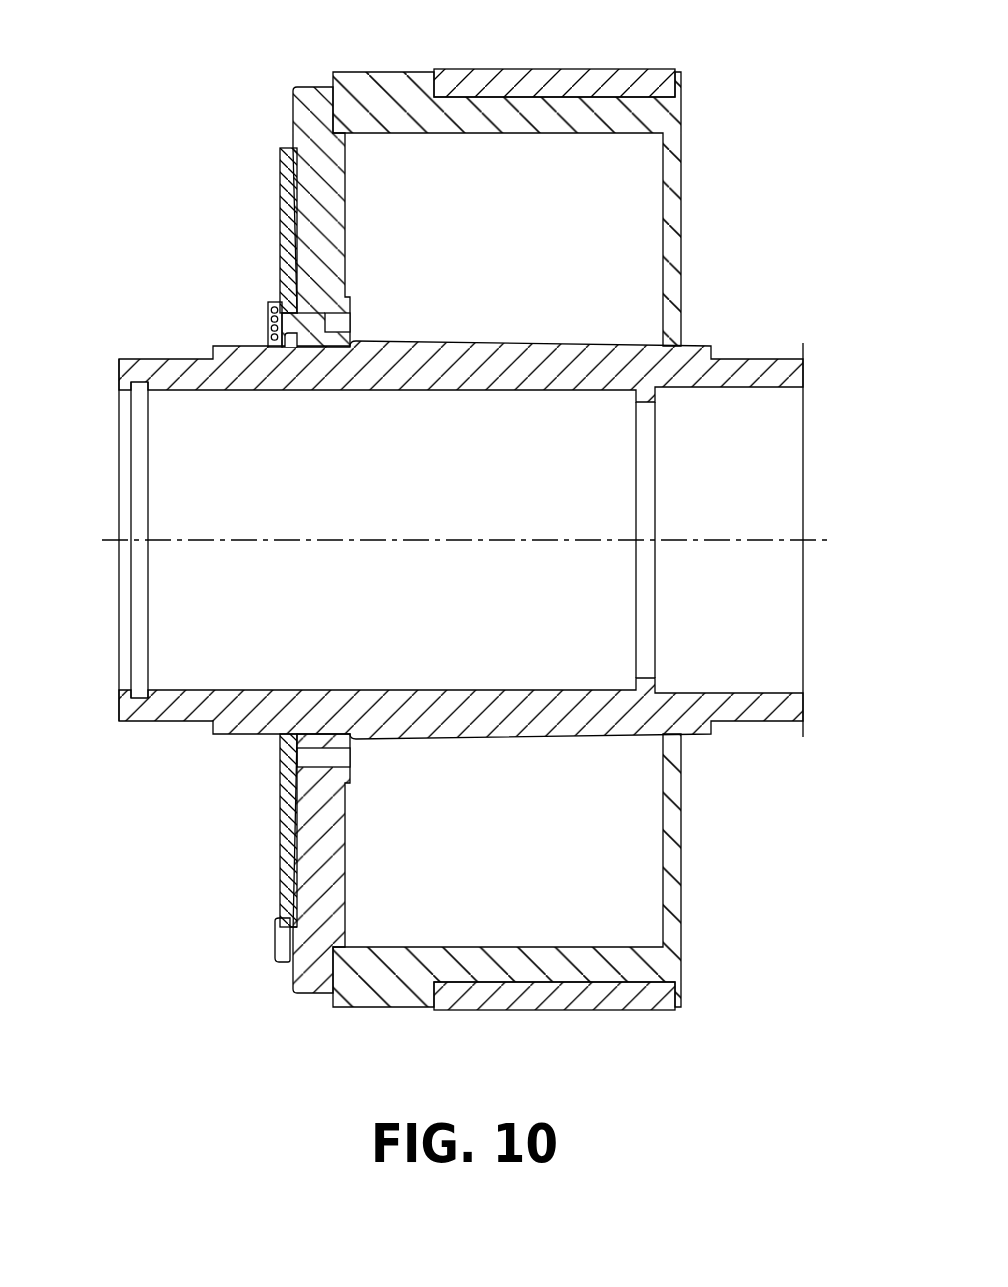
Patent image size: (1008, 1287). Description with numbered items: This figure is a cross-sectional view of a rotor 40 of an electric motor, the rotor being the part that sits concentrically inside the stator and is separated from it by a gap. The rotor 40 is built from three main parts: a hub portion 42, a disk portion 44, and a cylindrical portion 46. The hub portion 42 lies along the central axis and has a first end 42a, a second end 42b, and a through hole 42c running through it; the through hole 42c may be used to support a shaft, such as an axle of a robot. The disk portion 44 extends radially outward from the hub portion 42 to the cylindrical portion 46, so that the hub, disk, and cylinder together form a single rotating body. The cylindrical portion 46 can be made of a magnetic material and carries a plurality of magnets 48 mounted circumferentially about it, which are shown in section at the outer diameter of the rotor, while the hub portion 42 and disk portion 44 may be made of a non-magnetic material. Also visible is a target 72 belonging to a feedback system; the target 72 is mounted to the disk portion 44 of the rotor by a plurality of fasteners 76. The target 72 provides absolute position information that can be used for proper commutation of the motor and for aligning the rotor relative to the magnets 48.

The rotor 40 is at (100, 182).
The hub portion 42 is at (246, 736).
The first end 42a is at (118, 375).
The second end 42b is at (805, 372).
The through hole 42c is at (224, 609).
The disk portion 44 is at (305, 122).
The cylindrical portion 46 is at (373, 92).
The magnets 48 is at (560, 82).
The target 72 is at (264, 220).
The fasteners 76 is at (272, 307).